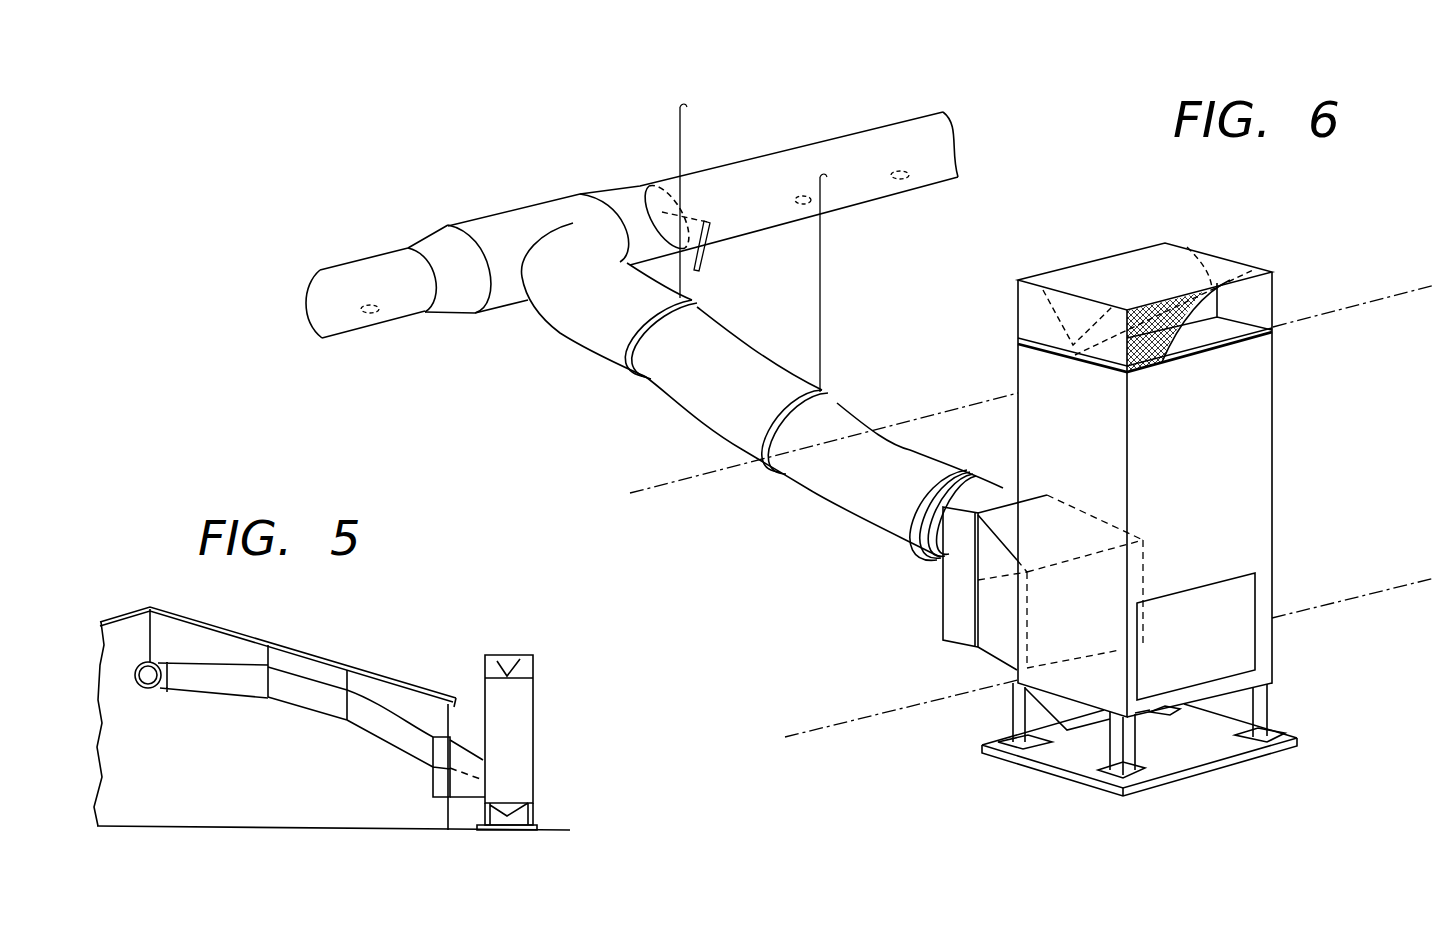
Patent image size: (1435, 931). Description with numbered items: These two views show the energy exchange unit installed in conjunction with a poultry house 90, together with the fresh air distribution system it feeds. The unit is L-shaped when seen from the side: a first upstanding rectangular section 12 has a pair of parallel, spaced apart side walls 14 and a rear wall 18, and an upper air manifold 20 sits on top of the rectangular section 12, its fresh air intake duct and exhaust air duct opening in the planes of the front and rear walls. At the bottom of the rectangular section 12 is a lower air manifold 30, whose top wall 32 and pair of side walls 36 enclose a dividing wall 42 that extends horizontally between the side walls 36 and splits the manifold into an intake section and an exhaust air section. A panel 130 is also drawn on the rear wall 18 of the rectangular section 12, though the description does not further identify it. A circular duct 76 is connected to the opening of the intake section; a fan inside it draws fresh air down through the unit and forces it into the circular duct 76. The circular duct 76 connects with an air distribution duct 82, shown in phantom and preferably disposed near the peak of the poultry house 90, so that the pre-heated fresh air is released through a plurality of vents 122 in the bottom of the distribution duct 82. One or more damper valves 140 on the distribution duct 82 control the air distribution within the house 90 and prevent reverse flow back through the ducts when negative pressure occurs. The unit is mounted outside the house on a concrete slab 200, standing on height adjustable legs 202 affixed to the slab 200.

In FIG. 6, the upstanding rectangular section 12 is at (1283, 498).
In FIG. 6, the side walls 14 is at (1053, 390).
In FIG. 6, the rear wall 18 is at (1216, 434).
In FIG. 6, the upper air manifold 20 is at (1080, 290).
In FIG. 6, the lower air manifold 30 is at (976, 676).
In FIG. 6, the top wall 32 is at (983, 537).
In FIG. 6, the side walls 36 is at (1000, 627).
In FIG. 6, the dividing wall 42 is at (1085, 580).
In FIG. 6, the circular duct 76 is at (740, 398).
In FIG. 6, the air distribution duct 82 is at (507, 246).
In FIG. 5, the poultry house 90 is at (283, 803).
In FIG. 6, the vents 122 is at (372, 302).
In FIG. 6, the access panel 130 is at (1222, 654).
In FIG. 6, the damper valve 140 is at (660, 194).
In FIG. 6, the concrete slab 200 is at (1190, 742).
In FIG. 6, the height adjustable legs 202 is at (1120, 755).